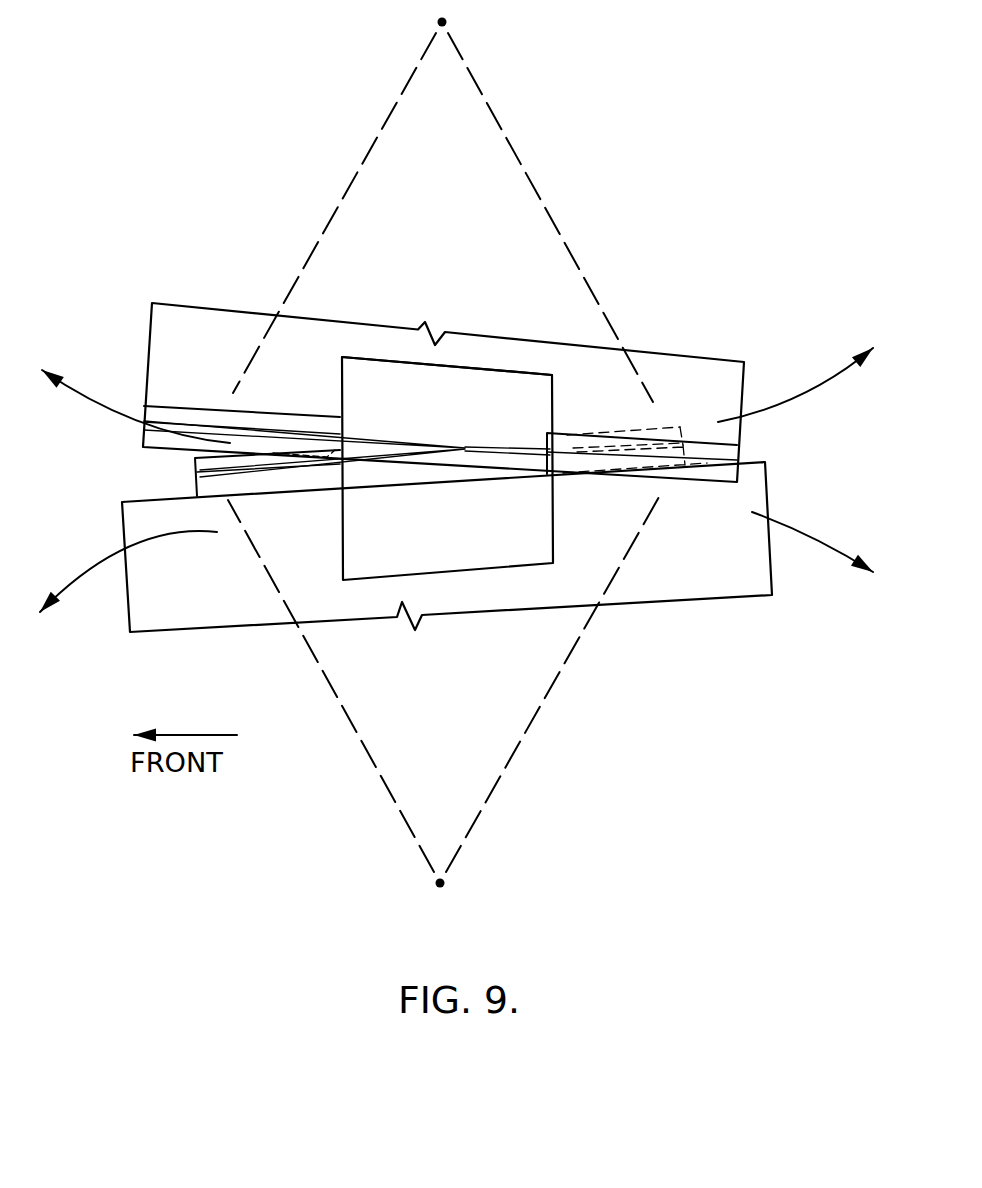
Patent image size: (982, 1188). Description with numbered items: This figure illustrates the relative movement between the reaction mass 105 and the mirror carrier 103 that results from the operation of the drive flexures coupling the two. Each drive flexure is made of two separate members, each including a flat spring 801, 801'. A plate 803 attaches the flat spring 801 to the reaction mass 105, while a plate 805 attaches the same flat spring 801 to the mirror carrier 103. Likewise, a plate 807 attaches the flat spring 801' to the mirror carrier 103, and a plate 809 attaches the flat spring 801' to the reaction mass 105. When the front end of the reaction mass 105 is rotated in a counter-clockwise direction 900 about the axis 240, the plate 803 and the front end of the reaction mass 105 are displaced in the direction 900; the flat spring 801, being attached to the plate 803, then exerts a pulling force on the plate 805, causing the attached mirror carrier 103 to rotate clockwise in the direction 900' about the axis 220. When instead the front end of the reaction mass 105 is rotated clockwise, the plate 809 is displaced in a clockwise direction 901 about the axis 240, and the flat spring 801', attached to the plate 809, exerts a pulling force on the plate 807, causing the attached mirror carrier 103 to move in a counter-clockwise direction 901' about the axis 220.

The mirror carrier 103 is at (535, 351).
The reaction mass 105 is at (243, 598).
The flat spring 801 is at (447, 468).
The flat spring 801' is at (447, 397).
The plate 803 is at (193, 485).
The plate 805 is at (697, 480).
The plate 807 is at (173, 407).
The plate 809 is at (680, 427).
The axis 220 is at (447, 19).
The axis 240 is at (446, 880).
The counter-clockwise direction 900 is at (128, 594).
The clockwise direction 900' is at (136, 389).
The clockwise direction 901 is at (812, 560).
The counter-clockwise direction 901' is at (795, 351).